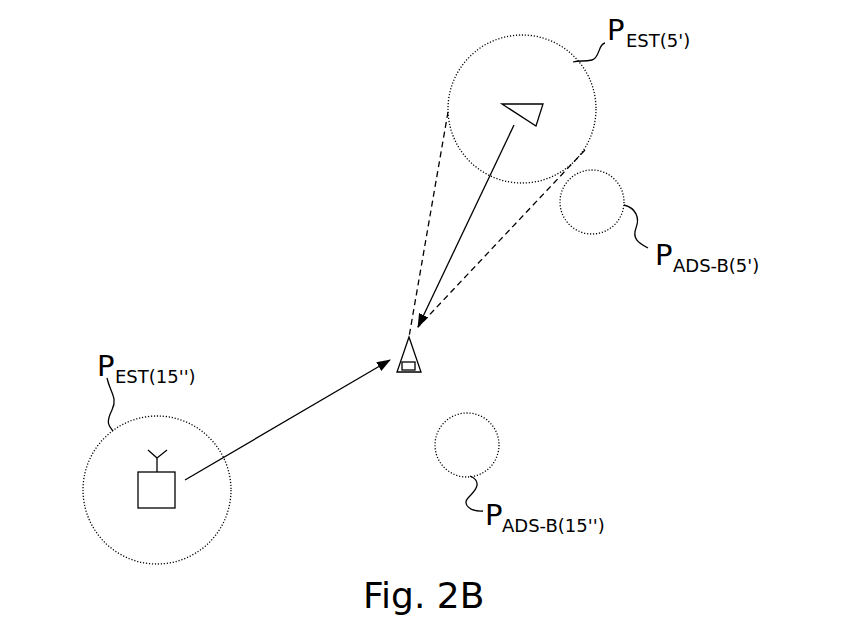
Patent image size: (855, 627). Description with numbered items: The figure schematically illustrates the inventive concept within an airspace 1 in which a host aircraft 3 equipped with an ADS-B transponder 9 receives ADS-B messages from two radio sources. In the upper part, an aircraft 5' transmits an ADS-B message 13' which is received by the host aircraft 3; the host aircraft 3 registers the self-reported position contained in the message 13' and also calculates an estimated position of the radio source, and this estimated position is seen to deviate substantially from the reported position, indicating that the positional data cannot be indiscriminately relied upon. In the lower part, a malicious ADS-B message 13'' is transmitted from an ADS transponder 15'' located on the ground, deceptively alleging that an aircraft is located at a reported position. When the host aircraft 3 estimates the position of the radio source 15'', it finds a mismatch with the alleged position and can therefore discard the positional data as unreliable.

The airspace 1 is at (252, 112).
The host aircraft 3 is at (417, 353).
The aircraft 5' is at (544, 126).
The ADS-B transponder 9 is at (407, 372).
The ADS-B message 13' is at (484, 226).
The malicious ADS-B message 13'' is at (287, 420).
The ADS transponder 15'' is at (131, 479).